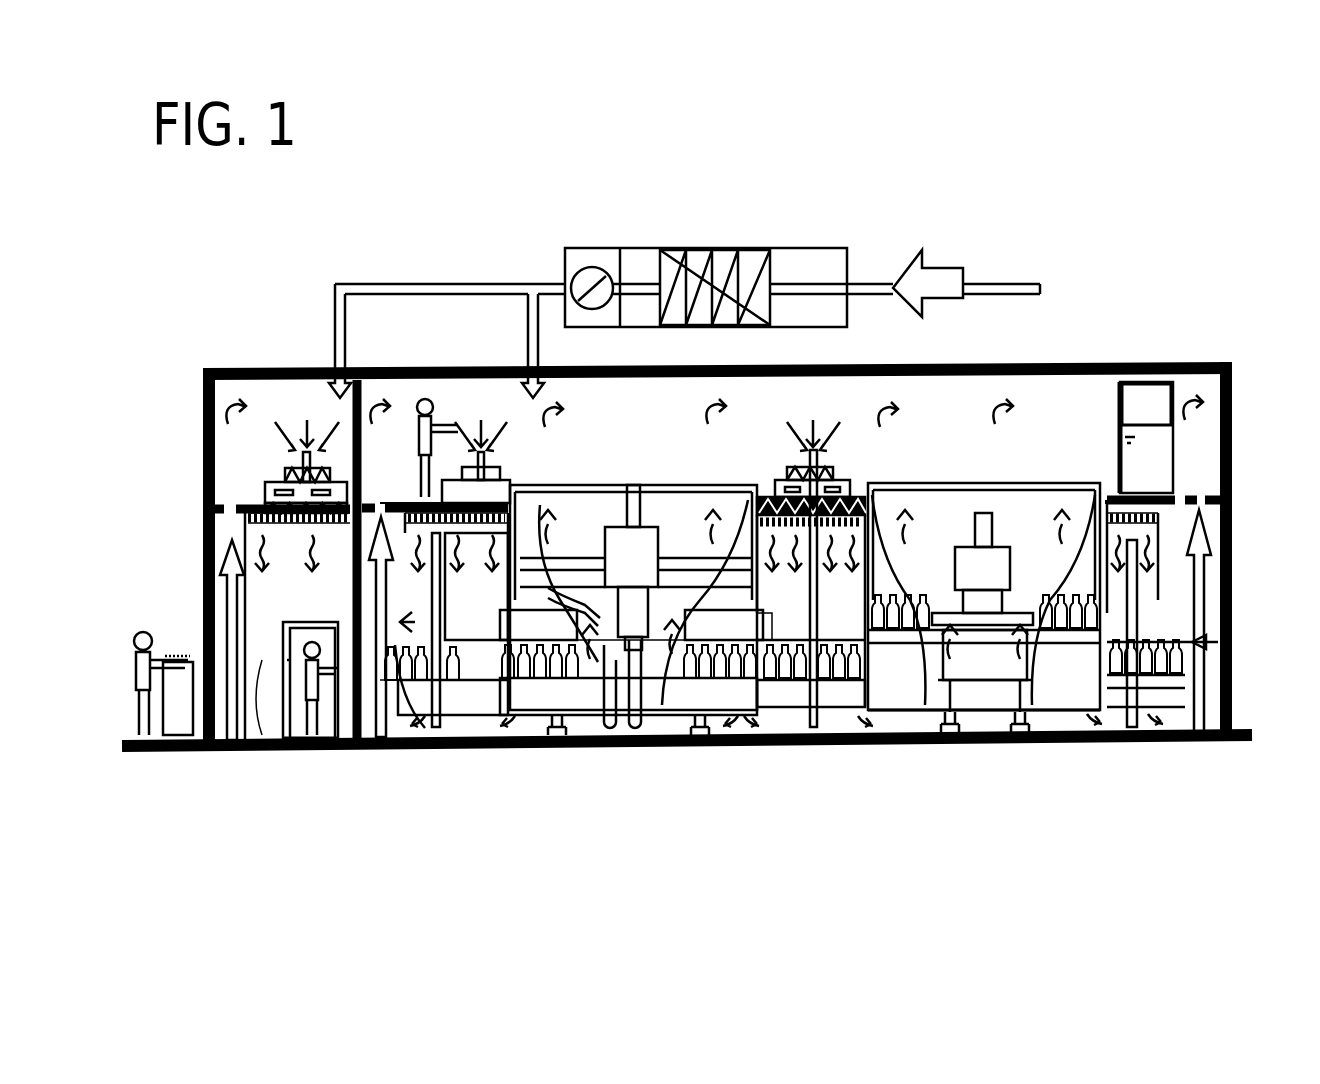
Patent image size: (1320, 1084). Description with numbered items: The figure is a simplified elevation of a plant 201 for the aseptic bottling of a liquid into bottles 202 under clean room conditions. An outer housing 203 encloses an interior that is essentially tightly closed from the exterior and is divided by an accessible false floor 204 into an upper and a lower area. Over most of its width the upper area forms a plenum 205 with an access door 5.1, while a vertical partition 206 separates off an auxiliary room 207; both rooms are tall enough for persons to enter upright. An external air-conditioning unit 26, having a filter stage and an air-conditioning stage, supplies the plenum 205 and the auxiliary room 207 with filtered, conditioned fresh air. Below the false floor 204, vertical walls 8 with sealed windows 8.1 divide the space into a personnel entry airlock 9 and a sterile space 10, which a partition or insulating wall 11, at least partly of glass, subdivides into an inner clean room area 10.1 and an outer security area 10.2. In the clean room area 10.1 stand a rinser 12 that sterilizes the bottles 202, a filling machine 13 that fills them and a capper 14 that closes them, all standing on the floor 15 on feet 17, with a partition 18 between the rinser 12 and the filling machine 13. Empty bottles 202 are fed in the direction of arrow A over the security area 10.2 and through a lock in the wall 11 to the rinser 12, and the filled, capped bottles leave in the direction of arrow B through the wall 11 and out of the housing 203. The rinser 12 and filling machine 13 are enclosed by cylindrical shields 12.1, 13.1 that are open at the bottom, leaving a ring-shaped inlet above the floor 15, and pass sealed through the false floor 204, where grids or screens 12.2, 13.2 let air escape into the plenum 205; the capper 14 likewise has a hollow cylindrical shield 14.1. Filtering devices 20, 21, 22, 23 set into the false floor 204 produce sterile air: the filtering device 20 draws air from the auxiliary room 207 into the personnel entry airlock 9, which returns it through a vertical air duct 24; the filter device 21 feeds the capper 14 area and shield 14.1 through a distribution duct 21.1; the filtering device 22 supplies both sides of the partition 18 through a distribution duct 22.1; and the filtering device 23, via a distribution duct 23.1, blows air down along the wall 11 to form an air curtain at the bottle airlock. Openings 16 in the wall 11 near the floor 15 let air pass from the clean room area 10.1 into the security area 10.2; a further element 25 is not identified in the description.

The plant 201 is at (1147, 206).
The bottles 202 is at (377, 752).
The outer housing 203 is at (1068, 366).
The false floor 204 is at (366, 500).
The plenum 205 is at (625, 432).
The vertical partition 206 is at (363, 400).
The auxiliary room 207 is at (273, 397).
The external air-conditioning unit 26 is at (787, 250).
The filtering device 20 is at (276, 478).
The filter device 21 is at (500, 470).
The filtering device 22 is at (835, 478).
The filtering device 23 is at (1087, 465).
The distribution duct 23.1 is at (1165, 492).
The vertical air duct 24 is at (222, 586).
The air flow 25 is at (285, 803).
The personnel entry airlock 9 is at (292, 590).
The vertical walls 8 is at (352, 598).
The sealed windows 8.1 is at (347, 752).
The sterile space 10 is at (412, 752).
The clean room area 10.1 is at (488, 752).
The security area 10.2 is at (417, 610).
The partition or insulating wall 11 is at (445, 620).
The rinser 12 is at (952, 508).
The cylindrical shield 12.1 is at (893, 745).
The grid or screen 12.2 is at (990, 485).
The filling machine 13 is at (680, 530).
The cylindrical shield 13.1 is at (720, 752).
The grid or screen 13.2 is at (713, 485).
The capper 14 is at (468, 752).
The hollow cylindrical shield 14.1 is at (540, 505).
The floor 15 is at (625, 752).
The openings 16 is at (435, 752).
The feet 17 is at (560, 752).
The partition 18 is at (812, 747).
The distribution duct 21.1 is at (456, 596).
The distribution duct 22.1 is at (870, 548).
The access door 5.1 is at (1140, 400).
The Arrow A is at (1183, 663).
The Arrow B is at (404, 670).